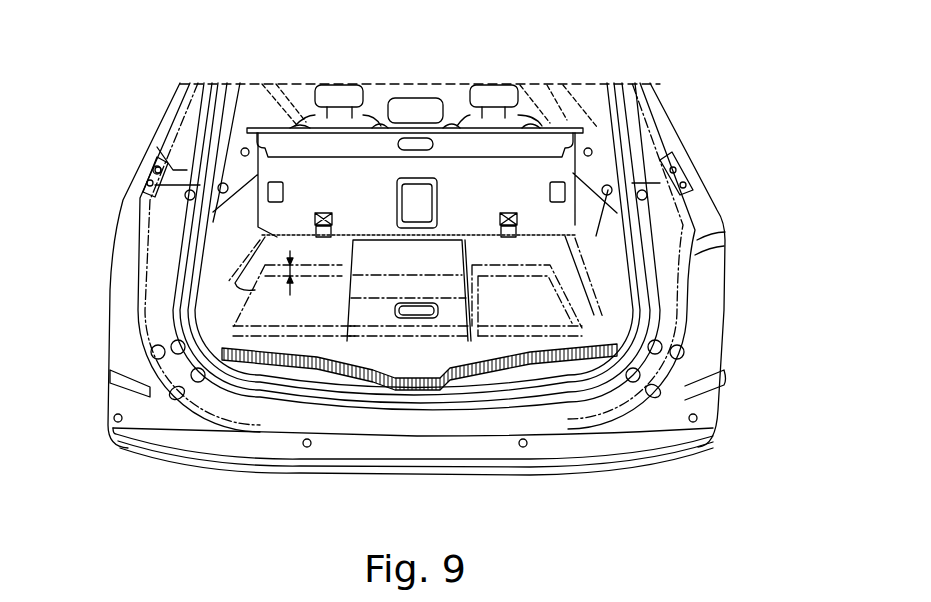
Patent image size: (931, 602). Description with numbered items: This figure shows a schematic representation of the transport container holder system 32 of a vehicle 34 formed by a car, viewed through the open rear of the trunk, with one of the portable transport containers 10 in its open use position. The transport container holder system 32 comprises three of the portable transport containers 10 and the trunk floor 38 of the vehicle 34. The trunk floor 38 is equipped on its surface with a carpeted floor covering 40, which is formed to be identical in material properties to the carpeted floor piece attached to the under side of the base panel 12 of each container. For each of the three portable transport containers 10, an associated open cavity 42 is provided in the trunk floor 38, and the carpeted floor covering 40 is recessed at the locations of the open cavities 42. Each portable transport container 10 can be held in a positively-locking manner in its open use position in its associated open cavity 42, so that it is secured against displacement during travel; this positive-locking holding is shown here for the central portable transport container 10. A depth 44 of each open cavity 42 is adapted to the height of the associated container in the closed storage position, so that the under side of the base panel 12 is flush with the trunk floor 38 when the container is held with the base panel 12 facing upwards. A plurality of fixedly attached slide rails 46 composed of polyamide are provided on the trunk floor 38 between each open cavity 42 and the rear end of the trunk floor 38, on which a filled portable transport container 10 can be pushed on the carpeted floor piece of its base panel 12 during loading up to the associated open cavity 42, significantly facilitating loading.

The portable transport container 10 is at (350, 285).
The base panel 12 is at (425, 265).
The transport container holder system 32 is at (620, 316).
The vehicle 34 is at (140, 175).
The trunk floor 38 is at (648, 244).
The carpeted floor covering 40 is at (505, 255).
The open cavity 42 is at (251, 330).
The depth 44 is at (295, 270).
The slide rail 46 is at (353, 355).